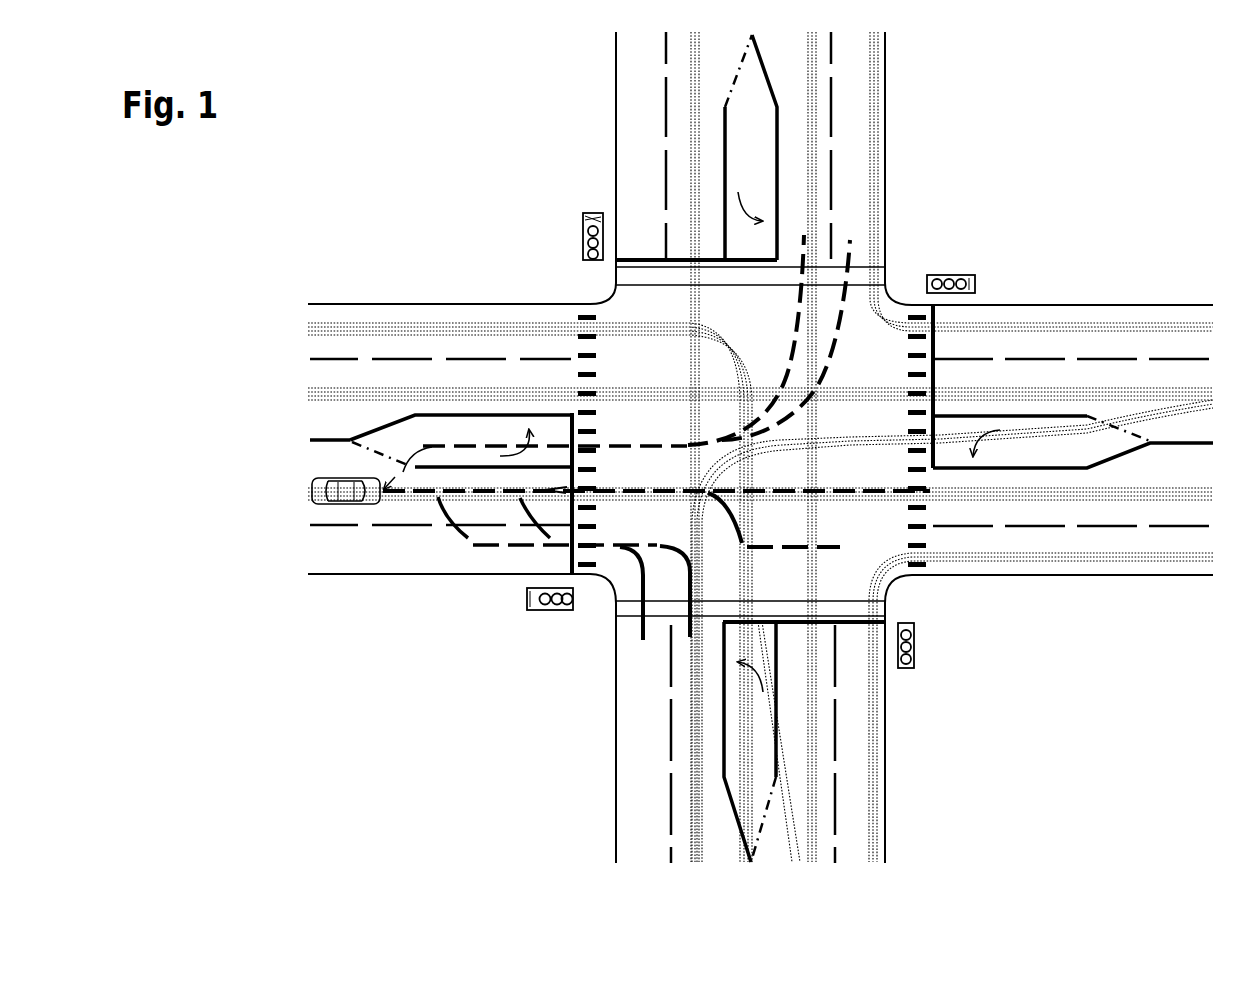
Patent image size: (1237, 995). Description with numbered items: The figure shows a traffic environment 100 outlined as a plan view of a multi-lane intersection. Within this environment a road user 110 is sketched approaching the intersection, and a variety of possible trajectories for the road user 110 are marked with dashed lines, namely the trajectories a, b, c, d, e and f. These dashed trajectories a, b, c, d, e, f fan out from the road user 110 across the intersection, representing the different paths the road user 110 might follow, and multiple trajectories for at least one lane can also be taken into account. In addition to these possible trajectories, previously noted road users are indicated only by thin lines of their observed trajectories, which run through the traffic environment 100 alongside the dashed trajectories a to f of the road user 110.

The traffic environment 100 is at (1100, 188).
The road user 110 is at (305, 541).
The trajectory a is at (791, 350).
The trajectory b is at (836, 350).
The trajectory c is at (820, 488).
The trajectory d is at (827, 547).
The trajectory e is at (655, 556).
The trajectory f is at (640, 628).